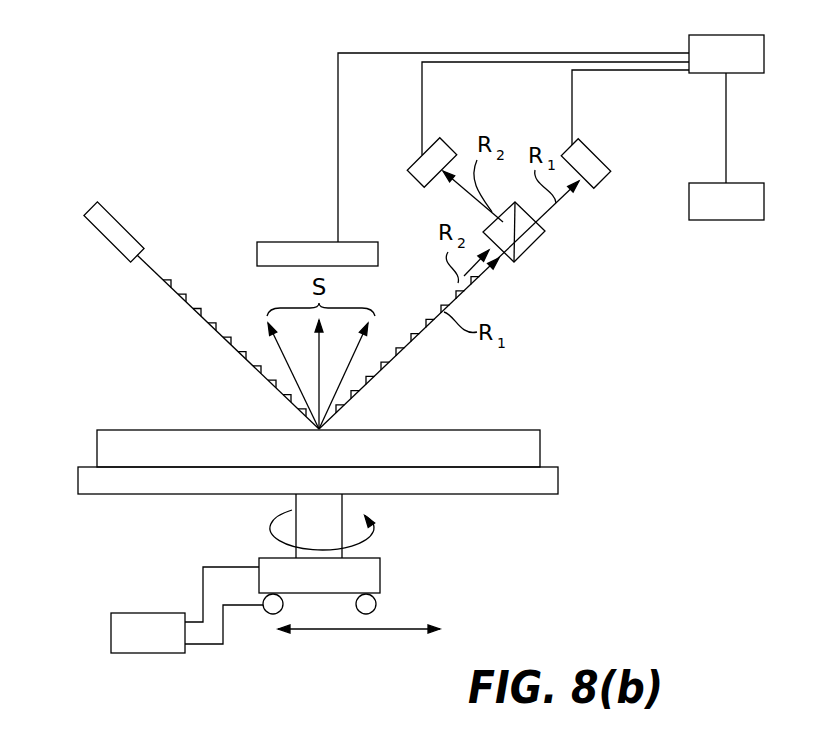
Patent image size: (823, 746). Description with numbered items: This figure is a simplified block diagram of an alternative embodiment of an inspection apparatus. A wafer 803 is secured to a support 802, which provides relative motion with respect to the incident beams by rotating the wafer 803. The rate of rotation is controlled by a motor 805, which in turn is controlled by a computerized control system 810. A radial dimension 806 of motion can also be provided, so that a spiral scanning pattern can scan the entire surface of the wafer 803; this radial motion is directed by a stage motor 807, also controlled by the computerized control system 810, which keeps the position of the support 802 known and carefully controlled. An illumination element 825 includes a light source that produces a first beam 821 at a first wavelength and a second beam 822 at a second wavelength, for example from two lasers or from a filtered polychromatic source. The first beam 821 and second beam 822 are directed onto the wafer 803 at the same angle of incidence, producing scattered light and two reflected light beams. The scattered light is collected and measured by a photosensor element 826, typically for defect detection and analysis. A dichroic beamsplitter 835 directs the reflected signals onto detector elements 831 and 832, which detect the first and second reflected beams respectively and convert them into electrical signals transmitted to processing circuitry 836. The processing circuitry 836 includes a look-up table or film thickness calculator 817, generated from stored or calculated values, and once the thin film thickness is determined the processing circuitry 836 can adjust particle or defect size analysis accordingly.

The support 802 is at (560, 477).
The wafer 803 is at (542, 448).
The motor 805 is at (299, 586).
The radial dimension of motion 806 is at (370, 629).
The stage motor 807 is at (263, 612).
The computerized control system 810 is at (169, 644).
The film thickness calculator 817 is at (707, 216).
The first beam 821 is at (168, 292).
The second beam 822 is at (158, 270).
The illumination element 825 is at (97, 230).
The photosensor element 826 is at (319, 242).
The detector element 831 is at (600, 148).
The detector element 832 is at (453, 143).
The beam splitter prism 835 is at (536, 245).
The processing circuitry 836 is at (707, 66).